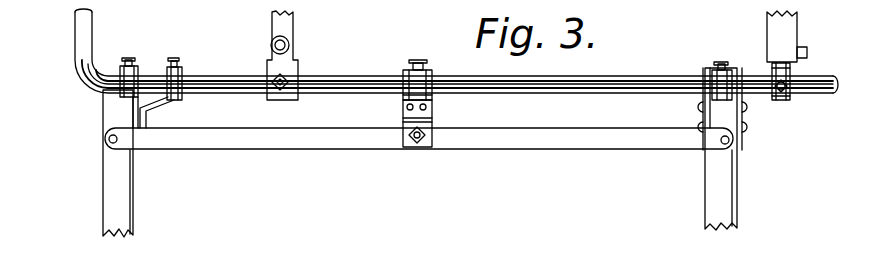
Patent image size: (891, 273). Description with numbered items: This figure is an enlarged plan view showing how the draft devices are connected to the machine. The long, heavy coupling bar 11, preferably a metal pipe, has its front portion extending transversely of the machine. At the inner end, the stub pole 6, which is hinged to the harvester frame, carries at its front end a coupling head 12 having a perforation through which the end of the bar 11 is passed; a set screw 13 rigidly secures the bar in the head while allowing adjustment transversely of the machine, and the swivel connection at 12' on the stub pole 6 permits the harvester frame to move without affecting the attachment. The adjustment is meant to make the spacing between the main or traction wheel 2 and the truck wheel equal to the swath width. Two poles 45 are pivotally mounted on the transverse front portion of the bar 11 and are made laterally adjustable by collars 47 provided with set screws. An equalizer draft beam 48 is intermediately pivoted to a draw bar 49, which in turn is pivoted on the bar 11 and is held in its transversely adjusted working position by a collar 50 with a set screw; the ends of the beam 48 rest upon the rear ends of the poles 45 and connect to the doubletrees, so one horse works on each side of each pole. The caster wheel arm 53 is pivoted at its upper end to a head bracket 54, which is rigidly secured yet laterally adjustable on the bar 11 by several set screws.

The main or traction wheel 2 is at (433, 0).
The stub pole 6 is at (797, 15).
The coupling bar 11 is at (92, 32).
The coupling head 12 is at (762, 71).
The swivel connection 12' is at (811, 70).
The set screw 13 is at (780, 100).
The poles 45 is at (125, 184).
The collars 47 is at (128, 72).
The equalizer draft beam 48 is at (297, 140).
The draw bar 49 is at (403, 117).
The collar 50 is at (411, 75).
The caster wheel arm 53 is at (288, 22).
The head bracket 54 is at (283, 68).